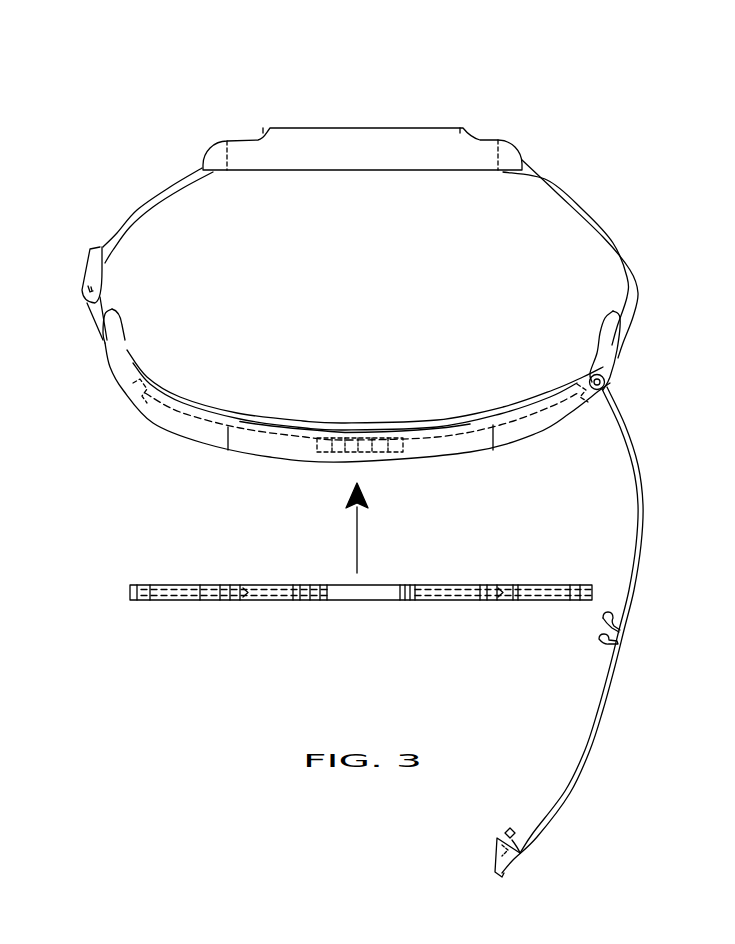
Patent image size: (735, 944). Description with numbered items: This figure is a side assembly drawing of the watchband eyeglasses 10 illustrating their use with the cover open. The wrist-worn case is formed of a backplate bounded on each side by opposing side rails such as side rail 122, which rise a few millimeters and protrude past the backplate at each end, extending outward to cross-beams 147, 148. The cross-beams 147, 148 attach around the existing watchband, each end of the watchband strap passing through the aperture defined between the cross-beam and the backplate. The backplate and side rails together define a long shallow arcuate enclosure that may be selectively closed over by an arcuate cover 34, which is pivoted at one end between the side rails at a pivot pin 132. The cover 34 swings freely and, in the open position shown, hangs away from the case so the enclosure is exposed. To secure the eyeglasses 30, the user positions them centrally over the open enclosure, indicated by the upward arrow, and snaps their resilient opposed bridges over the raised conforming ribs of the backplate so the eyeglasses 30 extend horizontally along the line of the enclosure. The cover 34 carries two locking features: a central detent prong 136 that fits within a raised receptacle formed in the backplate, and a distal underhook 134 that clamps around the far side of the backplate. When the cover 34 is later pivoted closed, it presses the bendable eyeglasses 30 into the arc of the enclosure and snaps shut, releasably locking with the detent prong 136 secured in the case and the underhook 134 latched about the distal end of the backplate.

The wristwatch device 10 is at (545, 108).
The eyeglasses 30 is at (240, 582).
The arcuate cover 34 is at (640, 533).
The side rail 122 is at (160, 417).
The pivot pin 132 is at (591, 375).
The distal underhook 134 is at (505, 834).
The central detent prong 136 is at (597, 637).
The cross-beam 147 is at (115, 310).
The cross-beam 148 is at (610, 310).